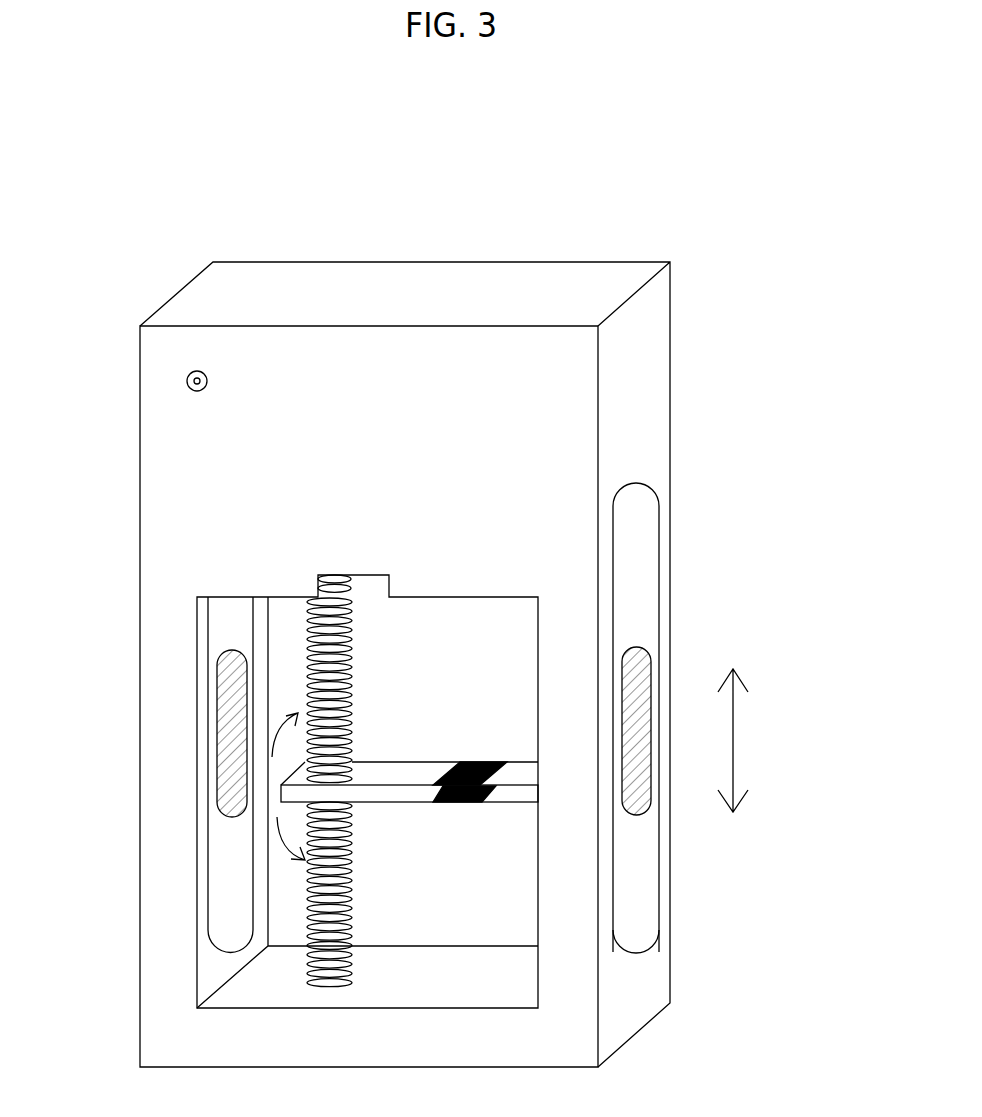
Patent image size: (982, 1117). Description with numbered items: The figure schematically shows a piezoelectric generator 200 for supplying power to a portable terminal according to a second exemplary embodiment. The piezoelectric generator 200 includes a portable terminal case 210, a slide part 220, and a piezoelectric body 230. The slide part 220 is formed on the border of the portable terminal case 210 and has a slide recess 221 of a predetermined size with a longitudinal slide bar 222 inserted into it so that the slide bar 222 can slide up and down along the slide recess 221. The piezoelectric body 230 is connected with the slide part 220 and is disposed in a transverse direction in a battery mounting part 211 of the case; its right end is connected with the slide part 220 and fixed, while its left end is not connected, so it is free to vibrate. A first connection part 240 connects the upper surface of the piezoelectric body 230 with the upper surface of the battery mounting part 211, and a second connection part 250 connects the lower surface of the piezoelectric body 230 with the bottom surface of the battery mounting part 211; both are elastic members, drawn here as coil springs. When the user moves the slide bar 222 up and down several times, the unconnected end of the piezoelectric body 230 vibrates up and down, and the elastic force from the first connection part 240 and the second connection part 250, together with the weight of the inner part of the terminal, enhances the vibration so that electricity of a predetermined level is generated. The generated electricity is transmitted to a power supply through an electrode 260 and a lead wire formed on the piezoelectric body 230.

The piezoelectric generator 200 is at (458, 196).
The portable terminal case 210 is at (562, 432).
The battery mounting part 211 is at (487, 876).
The slide part 220 is at (795, 510).
The slide recess 221 is at (627, 557).
The slide bar 222 is at (634, 690).
The piezoelectric body 230 is at (303, 765).
The first connection part 240 is at (330, 642).
The second connection part 250 is at (318, 897).
The electrode 260 is at (482, 762).